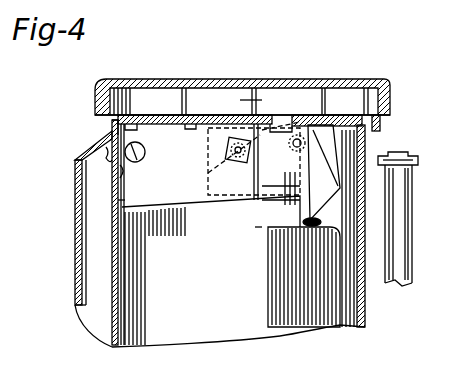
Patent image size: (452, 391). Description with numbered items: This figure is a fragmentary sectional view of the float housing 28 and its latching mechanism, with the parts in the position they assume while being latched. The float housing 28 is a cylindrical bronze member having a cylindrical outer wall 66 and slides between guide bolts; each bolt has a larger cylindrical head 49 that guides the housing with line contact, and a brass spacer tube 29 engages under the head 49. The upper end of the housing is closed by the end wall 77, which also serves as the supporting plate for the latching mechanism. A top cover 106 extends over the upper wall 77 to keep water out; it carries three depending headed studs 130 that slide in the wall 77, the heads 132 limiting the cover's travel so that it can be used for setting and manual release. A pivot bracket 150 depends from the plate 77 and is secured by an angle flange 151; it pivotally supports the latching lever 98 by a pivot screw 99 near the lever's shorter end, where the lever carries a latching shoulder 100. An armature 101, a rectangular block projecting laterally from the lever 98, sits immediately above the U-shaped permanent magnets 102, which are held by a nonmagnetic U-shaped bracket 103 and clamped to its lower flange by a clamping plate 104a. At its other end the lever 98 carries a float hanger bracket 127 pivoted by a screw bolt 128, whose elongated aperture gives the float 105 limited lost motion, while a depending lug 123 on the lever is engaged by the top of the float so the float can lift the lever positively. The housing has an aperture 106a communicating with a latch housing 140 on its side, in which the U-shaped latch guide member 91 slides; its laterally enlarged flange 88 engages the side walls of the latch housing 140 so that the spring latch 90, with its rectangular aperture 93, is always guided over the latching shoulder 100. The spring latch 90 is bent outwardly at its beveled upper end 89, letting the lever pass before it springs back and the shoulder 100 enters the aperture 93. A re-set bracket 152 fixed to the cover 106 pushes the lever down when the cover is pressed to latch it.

The cover 106 is at (386, 82).
The depending headed studs 130 is at (174, 101).
The end wall 77 is at (148, 111).
The angle flange 151 is at (242, 88).
The re-set bracket 152 is at (258, 100).
The heads 132 is at (188, 118).
The pivot bracket 150 is at (112, 128).
The rectangular aperture 93 is at (112, 183).
The laterally enlarged flange 88 is at (75, 160).
The spring latch 90 is at (95, 151).
The upper end 89 is at (116, 147).
The latch housing 140 is at (75, 283).
The latch guide member 91 is at (95, 311).
The float housing 28 is at (115, 348).
The aperture 106a is at (118, 200).
The pivot screw 99 is at (141, 154).
The latching shoulder 100 is at (128, 172).
The latching lever 98 is at (196, 208).
The screw bolt 128 is at (256, 161).
The float hanger bracket 127 is at (228, 210).
The clamping plate 104a is at (260, 232).
The U-shaped bracket 103 is at (288, 155).
The permanent magnets 102 is at (292, 184).
The depending lug 123 is at (310, 203).
The armature 101 is at (342, 143).
The float 105 is at (284, 316).
The cylindrical outer wall 66 is at (365, 313).
The cylindrical heads 49 is at (395, 165).
The spacer tube 29 is at (406, 207).